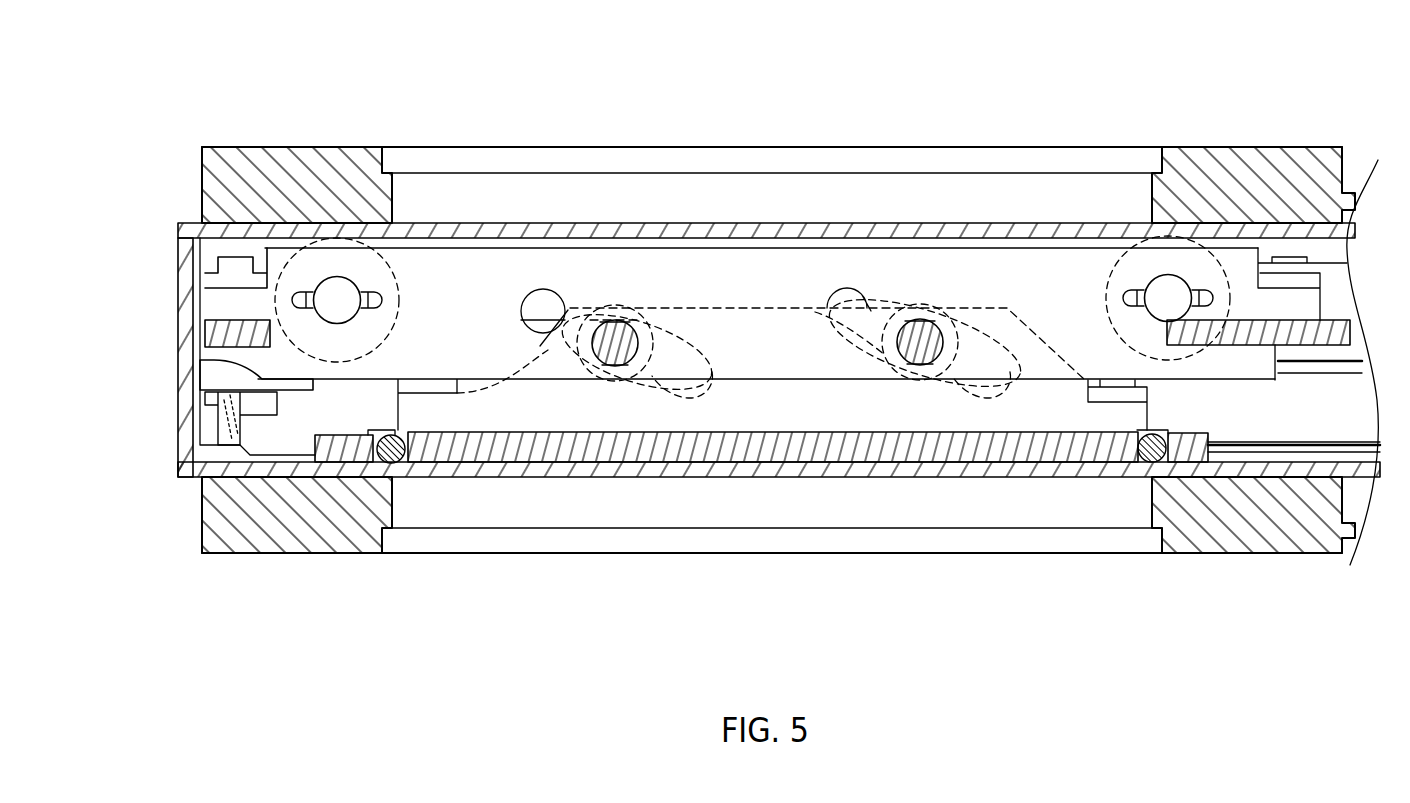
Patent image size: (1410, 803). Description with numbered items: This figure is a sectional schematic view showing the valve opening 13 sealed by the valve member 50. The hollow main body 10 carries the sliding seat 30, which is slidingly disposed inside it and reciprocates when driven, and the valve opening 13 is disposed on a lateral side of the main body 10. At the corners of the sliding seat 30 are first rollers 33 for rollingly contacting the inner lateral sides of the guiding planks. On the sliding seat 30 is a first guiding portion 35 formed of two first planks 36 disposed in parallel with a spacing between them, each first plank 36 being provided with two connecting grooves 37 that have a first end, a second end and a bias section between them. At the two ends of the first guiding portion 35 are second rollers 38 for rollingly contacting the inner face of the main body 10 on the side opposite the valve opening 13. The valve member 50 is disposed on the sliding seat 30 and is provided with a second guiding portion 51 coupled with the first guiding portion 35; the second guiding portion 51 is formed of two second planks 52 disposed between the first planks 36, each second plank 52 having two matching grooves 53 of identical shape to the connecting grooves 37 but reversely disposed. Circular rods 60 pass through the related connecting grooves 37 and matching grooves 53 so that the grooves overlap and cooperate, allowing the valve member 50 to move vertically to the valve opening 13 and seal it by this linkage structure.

The main body 10 is at (432, 105).
The valve opening 13 is at (775, 513).
The sliding seat 30 is at (212, 263).
The first roller 33 is at (210, 369).
The first guiding portion 35 is at (208, 279).
The first plank 36 is at (214, 310).
The connecting groove 37 is at (530, 290).
The second roller 38 is at (306, 243).
The valve member 50 is at (541, 462).
The second guiding portion 51 is at (468, 418).
The second plank 52 is at (1045, 412).
The matching groove 53 is at (688, 397).
The circular rod 60 is at (607, 362).